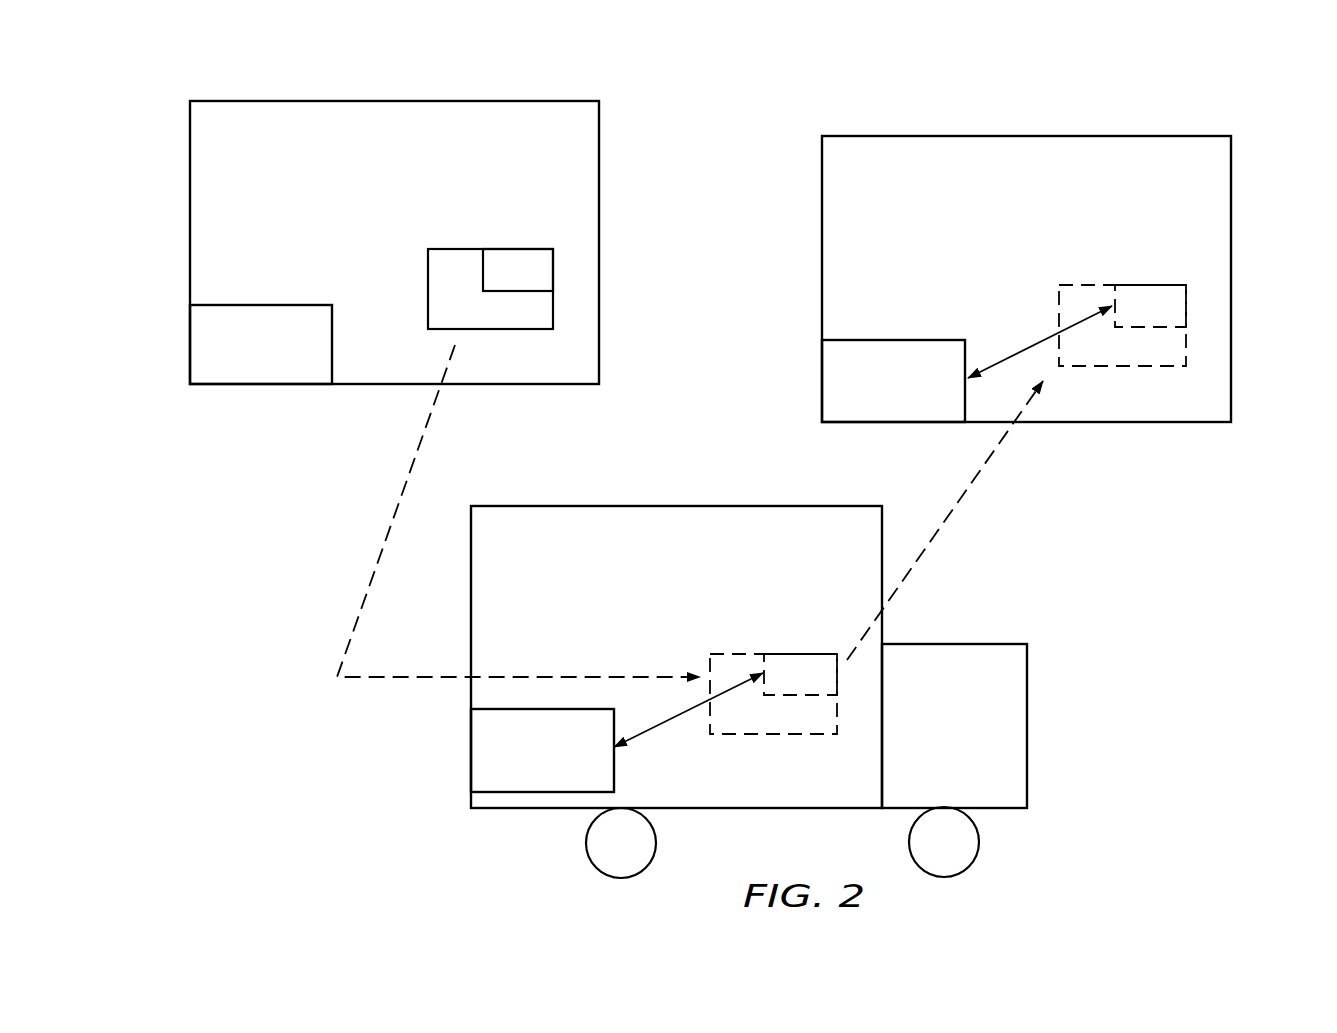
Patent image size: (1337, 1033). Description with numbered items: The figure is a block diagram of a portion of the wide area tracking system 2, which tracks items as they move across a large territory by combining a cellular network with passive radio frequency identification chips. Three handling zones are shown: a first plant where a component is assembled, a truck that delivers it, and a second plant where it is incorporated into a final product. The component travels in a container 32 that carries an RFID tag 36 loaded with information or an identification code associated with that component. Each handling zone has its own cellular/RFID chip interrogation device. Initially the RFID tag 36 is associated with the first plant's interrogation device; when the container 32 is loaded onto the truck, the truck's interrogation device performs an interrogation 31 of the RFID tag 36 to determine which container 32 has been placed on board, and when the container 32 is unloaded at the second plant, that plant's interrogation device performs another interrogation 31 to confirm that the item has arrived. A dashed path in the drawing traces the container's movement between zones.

The wide area tracking system 2 is at (884, 74).
The container 32 is at (542, 323).
The RFID tag 36 is at (510, 251).
The interrogation 31 is at (673, 723).